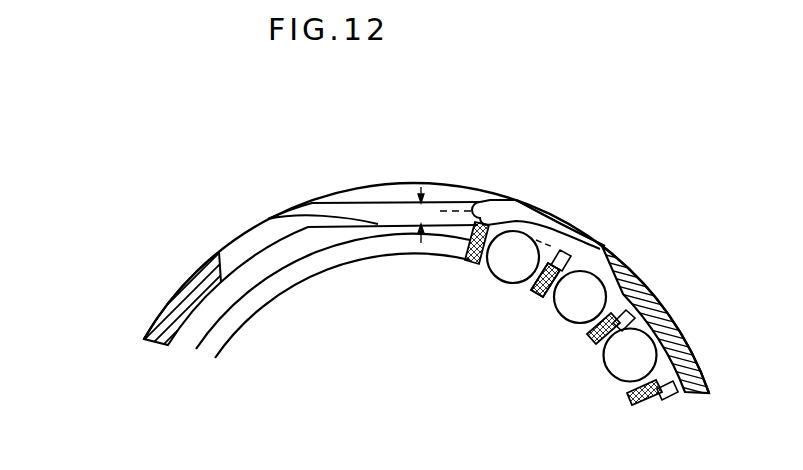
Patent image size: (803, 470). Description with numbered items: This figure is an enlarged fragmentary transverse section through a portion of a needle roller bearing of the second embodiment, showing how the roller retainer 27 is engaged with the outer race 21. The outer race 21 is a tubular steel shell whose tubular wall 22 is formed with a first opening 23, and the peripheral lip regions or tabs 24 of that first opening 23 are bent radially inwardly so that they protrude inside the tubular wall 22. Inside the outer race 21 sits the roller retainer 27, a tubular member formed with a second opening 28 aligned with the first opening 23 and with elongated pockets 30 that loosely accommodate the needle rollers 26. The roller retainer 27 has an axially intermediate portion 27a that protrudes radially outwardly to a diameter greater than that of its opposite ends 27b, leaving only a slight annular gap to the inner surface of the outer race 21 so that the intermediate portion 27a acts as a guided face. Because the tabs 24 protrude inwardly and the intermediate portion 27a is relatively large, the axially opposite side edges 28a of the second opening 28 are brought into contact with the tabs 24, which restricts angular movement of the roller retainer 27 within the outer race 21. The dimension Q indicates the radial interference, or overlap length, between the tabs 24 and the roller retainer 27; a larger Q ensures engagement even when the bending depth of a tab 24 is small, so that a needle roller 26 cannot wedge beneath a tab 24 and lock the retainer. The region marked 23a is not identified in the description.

The outer race 21 is at (663, 287).
The tubular wall 22 is at (677, 353).
The first opening 23 is at (437, 212).
The tapered end of outer ring 23a is at (267, 218).
The tabs 24 is at (390, 192).
The needle rollers 26 is at (488, 265).
The roller retainer 27 is at (651, 395).
The axially intermediate portion 27a is at (566, 268).
The opposite ends 27b is at (528, 283).
The second opening 28 is at (305, 274).
The side edges 28a is at (513, 199).
The elongated pockets 30 is at (610, 246).
The radial interference Q is at (422, 207).